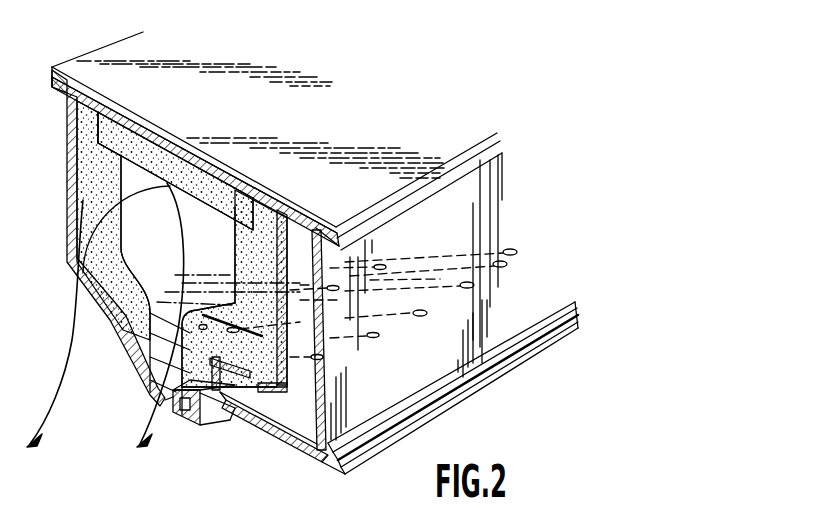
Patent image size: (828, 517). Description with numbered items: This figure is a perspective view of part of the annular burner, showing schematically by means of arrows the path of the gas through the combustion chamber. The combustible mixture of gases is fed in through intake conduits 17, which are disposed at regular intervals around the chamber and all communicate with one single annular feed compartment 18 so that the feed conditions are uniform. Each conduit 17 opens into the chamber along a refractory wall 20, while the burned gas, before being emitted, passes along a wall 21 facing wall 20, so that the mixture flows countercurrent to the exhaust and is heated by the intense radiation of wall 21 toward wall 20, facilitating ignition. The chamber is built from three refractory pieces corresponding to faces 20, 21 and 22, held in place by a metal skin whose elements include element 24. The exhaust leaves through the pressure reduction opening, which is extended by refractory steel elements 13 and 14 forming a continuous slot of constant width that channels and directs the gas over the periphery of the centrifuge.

The element of refractory steel 13 is at (211, 424).
The element of refractory steel 14 is at (123, 357).
The intake conduit 17 is at (440, 297).
The annular feed compartment 18 is at (277, 406).
The refractory wall 20 is at (243, 263).
The wall 21 is at (105, 187).
The face of the combustion chamber 22 is at (162, 157).
The metal skin element 24 is at (140, 127).